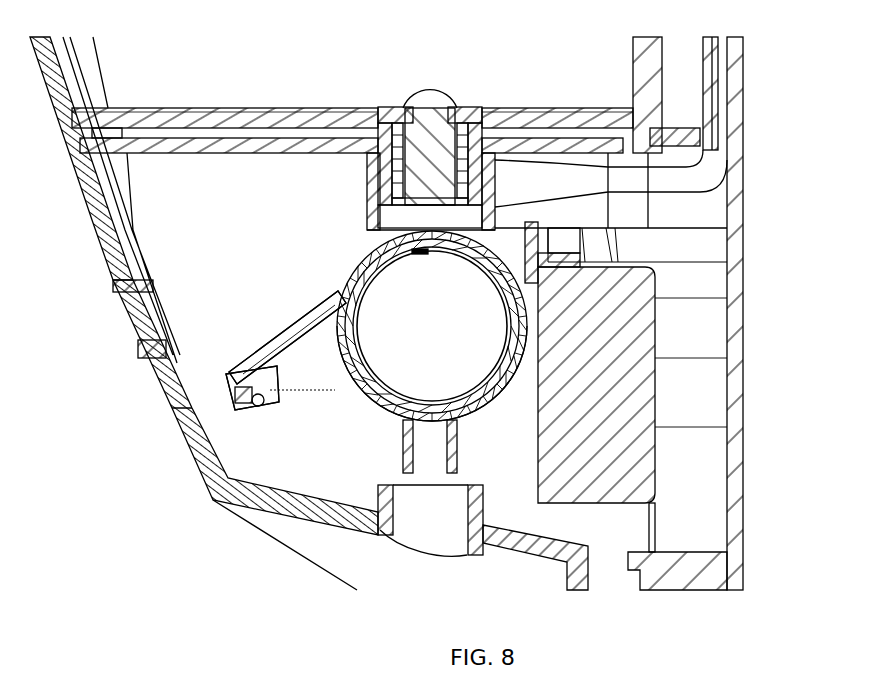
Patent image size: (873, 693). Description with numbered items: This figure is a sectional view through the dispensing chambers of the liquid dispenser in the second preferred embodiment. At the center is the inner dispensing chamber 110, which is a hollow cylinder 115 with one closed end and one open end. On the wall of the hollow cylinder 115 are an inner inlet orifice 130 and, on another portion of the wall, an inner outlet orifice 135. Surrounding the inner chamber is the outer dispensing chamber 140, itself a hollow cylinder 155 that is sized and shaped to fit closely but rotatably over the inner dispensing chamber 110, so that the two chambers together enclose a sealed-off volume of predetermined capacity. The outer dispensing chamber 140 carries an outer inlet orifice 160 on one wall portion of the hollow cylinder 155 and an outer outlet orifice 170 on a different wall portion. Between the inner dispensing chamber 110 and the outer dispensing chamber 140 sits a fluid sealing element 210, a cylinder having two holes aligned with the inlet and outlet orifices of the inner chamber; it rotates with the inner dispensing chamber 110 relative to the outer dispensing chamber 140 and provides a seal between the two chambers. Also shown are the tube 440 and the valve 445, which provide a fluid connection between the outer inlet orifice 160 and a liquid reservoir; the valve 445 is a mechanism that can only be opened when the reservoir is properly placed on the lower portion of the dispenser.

The valve 445 is at (420, 177).
The tube 440 is at (413, 215).
The outer inlet orifice 160 is at (437, 238).
The inner dispensing chamber 110 is at (440, 254).
The inner inlet orifice 130 is at (457, 250).
The hollow cylinder 115 is at (473, 347).
The fluid sealing element 210 is at (490, 390).
The inner outlet orifice 135 is at (375, 383).
The outer outlet orifice 170 is at (428, 462).
The outer dispensing chamber 140 is at (347, 260).
The hollow cylinder 155 is at (201, 350).